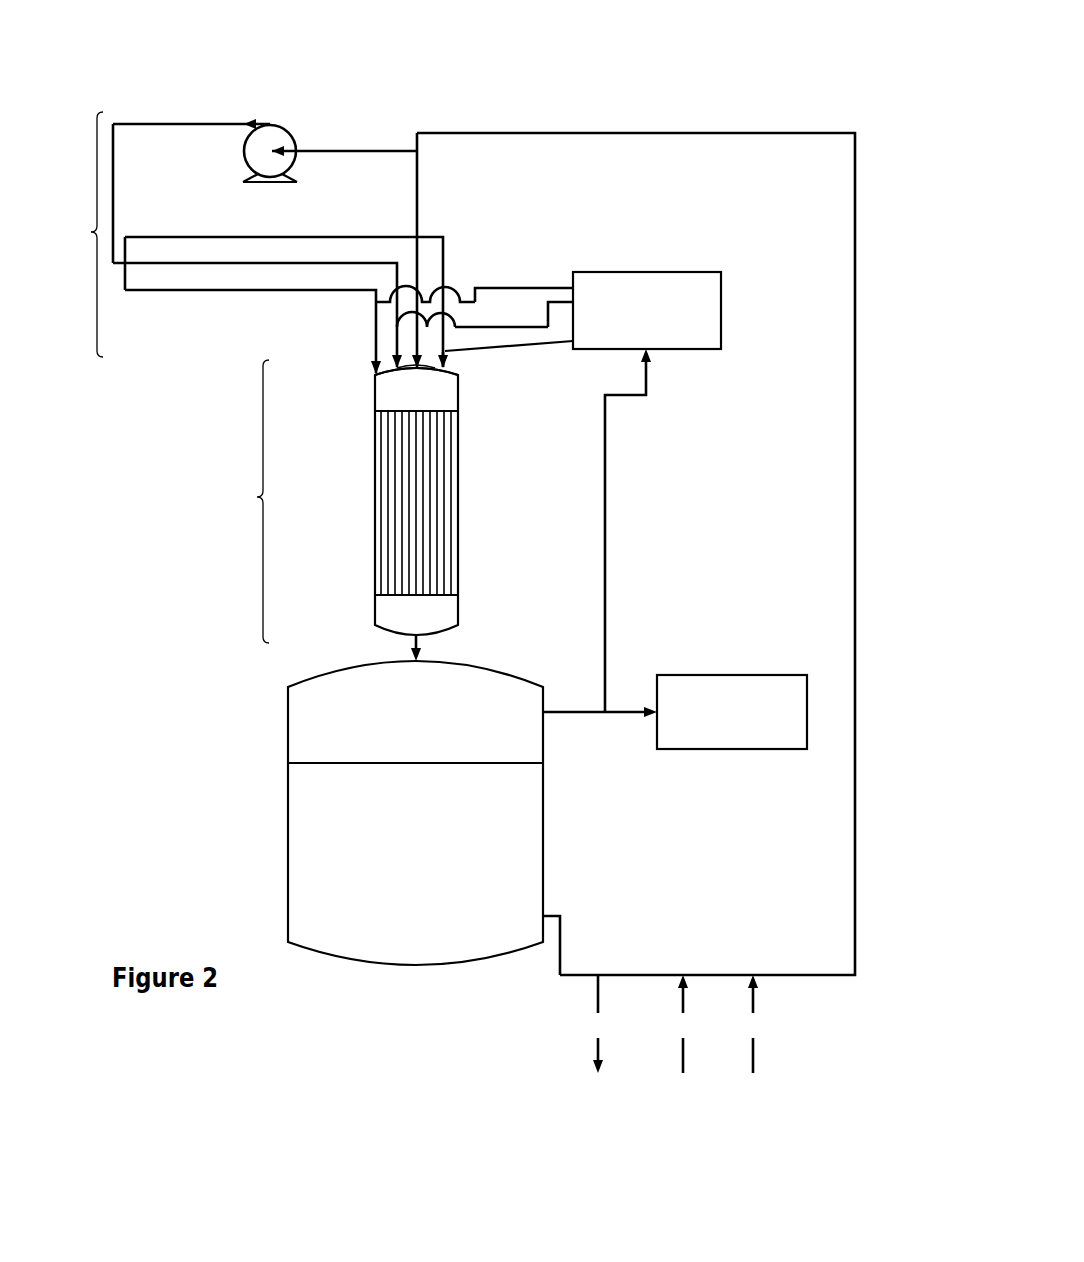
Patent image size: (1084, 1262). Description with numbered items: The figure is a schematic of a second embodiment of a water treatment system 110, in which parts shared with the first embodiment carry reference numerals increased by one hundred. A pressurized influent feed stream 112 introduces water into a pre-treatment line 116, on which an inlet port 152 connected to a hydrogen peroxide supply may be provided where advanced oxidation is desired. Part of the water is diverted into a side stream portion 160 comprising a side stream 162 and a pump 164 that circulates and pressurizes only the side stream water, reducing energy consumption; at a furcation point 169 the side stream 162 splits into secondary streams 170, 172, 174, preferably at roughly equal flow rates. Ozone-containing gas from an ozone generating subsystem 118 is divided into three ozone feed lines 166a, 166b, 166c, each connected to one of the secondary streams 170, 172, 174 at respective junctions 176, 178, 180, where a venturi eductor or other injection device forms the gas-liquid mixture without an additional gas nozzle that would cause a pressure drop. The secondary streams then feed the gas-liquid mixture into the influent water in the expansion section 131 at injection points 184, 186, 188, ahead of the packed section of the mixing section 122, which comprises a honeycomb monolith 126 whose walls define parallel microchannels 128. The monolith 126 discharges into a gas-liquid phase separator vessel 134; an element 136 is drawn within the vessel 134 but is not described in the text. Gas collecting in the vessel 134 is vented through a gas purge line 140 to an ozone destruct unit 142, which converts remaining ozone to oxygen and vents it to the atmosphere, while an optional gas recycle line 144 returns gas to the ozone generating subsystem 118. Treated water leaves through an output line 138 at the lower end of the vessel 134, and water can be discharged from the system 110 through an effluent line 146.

The water treatment system 110 is at (793, 84).
The influent feed stream 112 is at (753, 1050).
The pre-treatment line 116 is at (857, 658).
The ozone generating subsystem 118 is at (709, 284).
The mixing section 122 is at (244, 501).
The monolith 126 is at (459, 531).
The microchannels 128 is at (459, 573).
The expansion section 131 is at (462, 388).
The gas-liquid phase separator vessel 134 is at (390, 940).
The liquid level 136 is at (331, 764).
The output line 138 is at (562, 930).
The gas purge line 140 is at (570, 715).
The ozone destruct unit 142 is at (776, 739).
The gas recycle line 144 is at (606, 440).
The effluent line 146 is at (598, 1049).
The inlet port 152 is at (683, 1050).
The side stream portion 160 is at (80, 234).
The side stream 162 is at (352, 150).
The pump 164 is at (290, 129).
The ozone feed line 166a is at (481, 287).
The ozone feed line 166b is at (520, 326).
The ozone feed line 166c is at (562, 301).
The furcation point 169 is at (122, 268).
The secondary stream 170 is at (196, 237).
The secondary stream 172 is at (196, 263).
The secondary stream 174 is at (196, 290).
The junction 176 is at (446, 352).
The junction 178 is at (404, 319).
The junction 180 is at (376, 302).
The injection point 184 is at (376, 373).
The injection point 186 is at (398, 371).
The injection point 188 is at (448, 367).